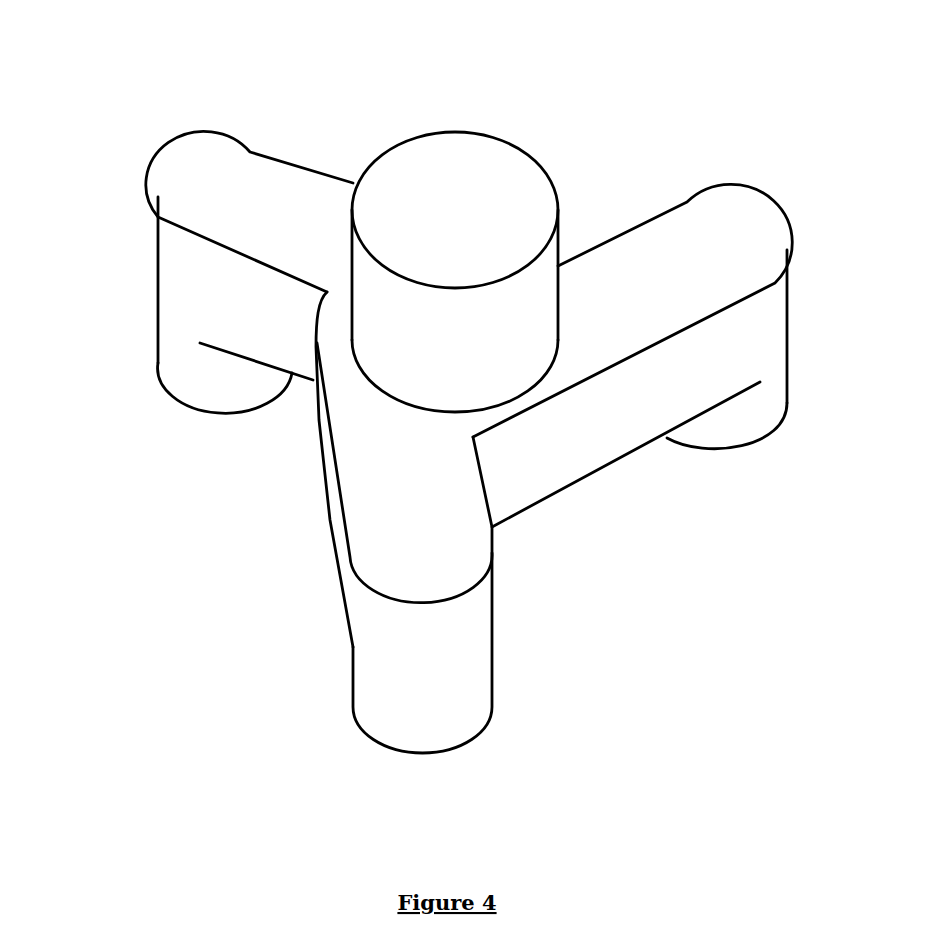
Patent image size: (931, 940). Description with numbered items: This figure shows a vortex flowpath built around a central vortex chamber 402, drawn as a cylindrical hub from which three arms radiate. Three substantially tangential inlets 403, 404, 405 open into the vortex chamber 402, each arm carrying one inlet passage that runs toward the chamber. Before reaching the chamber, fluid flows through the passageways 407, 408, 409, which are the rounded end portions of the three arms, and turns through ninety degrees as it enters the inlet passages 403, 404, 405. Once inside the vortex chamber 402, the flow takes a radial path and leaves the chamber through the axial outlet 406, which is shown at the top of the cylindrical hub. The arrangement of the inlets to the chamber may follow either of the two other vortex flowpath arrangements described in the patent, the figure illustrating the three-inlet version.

The vortex chamber 402 is at (518, 403).
The tangential inlet 403 is at (372, 498).
The tangential inlet 404 is at (263, 185).
The tangential inlet 405 is at (625, 292).
The axial outlet 406 is at (445, 182).
The passageway 407 is at (395, 697).
The passageway 408 is at (192, 388).
The passageway 409 is at (718, 418).